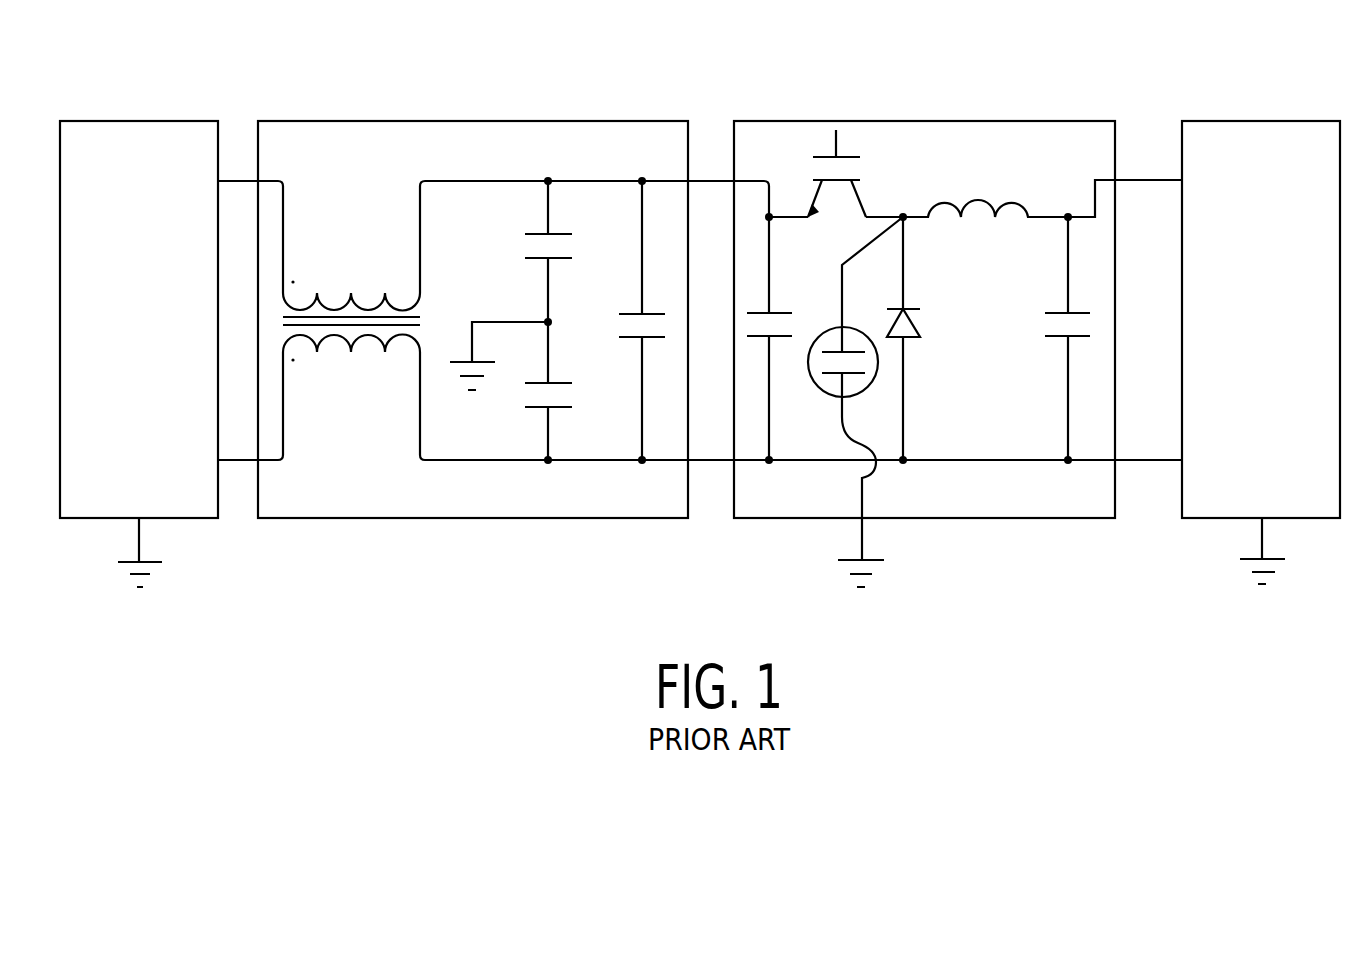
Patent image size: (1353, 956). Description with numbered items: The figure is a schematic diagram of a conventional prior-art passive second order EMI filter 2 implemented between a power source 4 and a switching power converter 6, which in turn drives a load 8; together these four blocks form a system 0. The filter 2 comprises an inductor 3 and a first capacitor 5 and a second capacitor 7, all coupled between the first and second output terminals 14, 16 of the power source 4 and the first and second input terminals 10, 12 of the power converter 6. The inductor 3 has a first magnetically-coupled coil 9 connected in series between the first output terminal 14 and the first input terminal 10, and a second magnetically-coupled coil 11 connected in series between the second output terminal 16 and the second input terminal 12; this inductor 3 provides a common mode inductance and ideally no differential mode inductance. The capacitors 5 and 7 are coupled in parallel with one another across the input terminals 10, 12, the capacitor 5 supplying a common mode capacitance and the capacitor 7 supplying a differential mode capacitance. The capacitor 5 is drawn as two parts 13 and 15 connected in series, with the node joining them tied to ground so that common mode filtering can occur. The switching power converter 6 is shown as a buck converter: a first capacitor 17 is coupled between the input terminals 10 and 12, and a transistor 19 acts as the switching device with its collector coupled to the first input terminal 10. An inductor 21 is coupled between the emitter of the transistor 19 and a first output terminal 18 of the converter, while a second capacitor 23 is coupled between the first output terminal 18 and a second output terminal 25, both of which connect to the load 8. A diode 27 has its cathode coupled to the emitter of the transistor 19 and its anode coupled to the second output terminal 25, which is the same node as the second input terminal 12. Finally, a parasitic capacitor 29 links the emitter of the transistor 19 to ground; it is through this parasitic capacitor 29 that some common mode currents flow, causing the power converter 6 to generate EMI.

The system 0 is at (344, 616).
The passive second order EMI filter 2 is at (533, 120).
The inductor 3 is at (334, 353).
The power source 4 is at (128, 120).
The first capacitor 5 is at (553, 380).
The switching power converter 6 is at (868, 121).
The second capacitor 7 is at (653, 348).
The load 8 is at (1232, 121).
The first magnetically-coupled coil 9 is at (368, 284).
The first input terminal 10 is at (733, 180).
The second magnetically-coupled coil 11 is at (369, 358).
The second input terminal 12 is at (733, 461).
The first part of capacitor 13 is at (516, 247).
The first output terminal 14 is at (218, 181).
The second part of capacitor 15 is at (517, 399).
The second output terminal 16 is at (218, 463).
The first capacitor 17 is at (783, 338).
The first output terminal 18 is at (1115, 180).
The transistor 19 is at (835, 206).
The inductor 21 is at (980, 197).
The second capacitor 23 is at (1058, 338).
The second output terminal 25 is at (1118, 460).
The diode 27 is at (915, 330).
The parasitic capacitor 29 is at (857, 376).